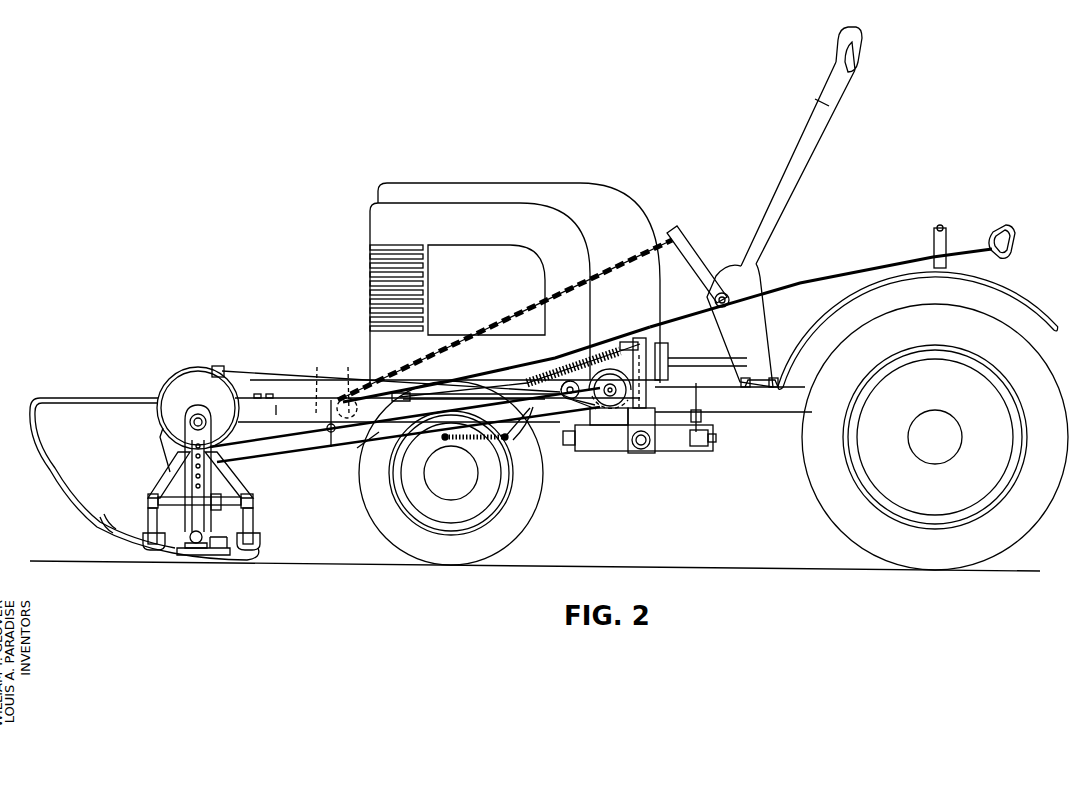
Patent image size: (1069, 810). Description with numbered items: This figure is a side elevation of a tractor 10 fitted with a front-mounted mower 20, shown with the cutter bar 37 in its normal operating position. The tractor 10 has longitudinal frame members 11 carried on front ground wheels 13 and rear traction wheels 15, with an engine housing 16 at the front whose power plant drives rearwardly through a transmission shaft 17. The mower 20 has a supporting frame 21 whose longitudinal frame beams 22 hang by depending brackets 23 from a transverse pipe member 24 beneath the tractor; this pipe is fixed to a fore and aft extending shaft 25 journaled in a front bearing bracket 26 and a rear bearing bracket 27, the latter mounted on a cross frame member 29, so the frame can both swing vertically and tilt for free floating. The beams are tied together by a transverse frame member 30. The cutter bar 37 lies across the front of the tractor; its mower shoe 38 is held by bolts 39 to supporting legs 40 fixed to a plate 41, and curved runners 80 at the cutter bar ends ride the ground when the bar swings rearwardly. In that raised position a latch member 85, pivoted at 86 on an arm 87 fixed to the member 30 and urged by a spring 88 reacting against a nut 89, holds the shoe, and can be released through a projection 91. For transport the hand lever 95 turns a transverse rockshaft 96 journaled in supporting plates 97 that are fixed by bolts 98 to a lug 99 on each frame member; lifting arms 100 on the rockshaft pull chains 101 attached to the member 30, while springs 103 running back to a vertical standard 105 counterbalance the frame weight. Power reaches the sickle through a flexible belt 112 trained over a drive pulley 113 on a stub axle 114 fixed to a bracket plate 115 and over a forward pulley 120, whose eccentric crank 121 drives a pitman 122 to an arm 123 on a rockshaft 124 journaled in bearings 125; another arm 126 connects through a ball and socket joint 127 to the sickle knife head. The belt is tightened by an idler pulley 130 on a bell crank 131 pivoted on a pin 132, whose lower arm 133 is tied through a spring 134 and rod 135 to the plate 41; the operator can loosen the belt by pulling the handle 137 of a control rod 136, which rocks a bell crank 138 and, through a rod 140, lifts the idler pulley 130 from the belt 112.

The tractor 10 is at (511, 160).
The frame members 11 is at (773, 412).
The ground wheels 13 is at (530, 491).
The traction wheels 15 is at (806, 471).
The engine housing 16 is at (455, 224).
The transmission shaft 17 is at (690, 361).
The mower 20 is at (141, 370).
The supporting frame 21 is at (262, 379).
The frame beams 22 is at (282, 383).
The depending brackets 23 is at (648, 452).
The transverse pipe member 24 is at (638, 452).
The fore and aft extending shaft 25 is at (605, 449).
The front bearing bracket 26 is at (573, 446).
The rear bearing bracket 27 is at (700, 446).
The cross frame member 29 is at (700, 428).
The transverse frame member 30 is at (349, 379).
The cutter bar 37 is at (227, 559).
The mower shoe 38 is at (128, 544).
The bolts 39 is at (143, 534).
The supporting legs 40 is at (163, 477).
The plate 41 is at (170, 446).
The curved runners 80 is at (55, 481).
The latch member 85 is at (323, 437).
The pivot 86 is at (339, 388).
The arm 87 is at (334, 440).
The spring 88 is at (314, 386).
The nut 89 is at (280, 408).
The projection 91 is at (326, 446).
The hand lever 95 is at (832, 93).
The transverse rockshaft 96 is at (715, 299).
The supporting plates 97 is at (748, 336).
The bolts 98 is at (750, 380).
The lug 99 is at (758, 393).
The lifting arms 100 is at (688, 250).
The chains 101 is at (507, 318).
The springs 103 is at (590, 368).
The vertical standard 105 is at (646, 340).
The flexible belt 112 is at (248, 372).
The drive pulley 113 is at (636, 350).
The stub axle 114 is at (616, 391).
The bracket plate 115 is at (596, 411).
The pulley 120 is at (226, 368).
The eccentric crank 121 is at (198, 419).
The pitman 122 is at (190, 470).
The arm 123 is at (241, 526).
The rockshaft 124 is at (226, 508).
The bearings 125 is at (151, 499).
The arm 126 is at (193, 541).
The ball and socket joint 127 is at (195, 549).
The idler pulley 130 is at (569, 381).
The bell crank 131 is at (530, 428).
The pin 132 is at (510, 409).
The lower arm 133 is at (503, 441).
The spring 134 is at (448, 444).
The rod 135 is at (367, 441).
The control rod 136 is at (840, 283).
The handle 137 is at (1010, 243).
The bell crank 138 is at (396, 400).
The rod 140 is at (437, 388).